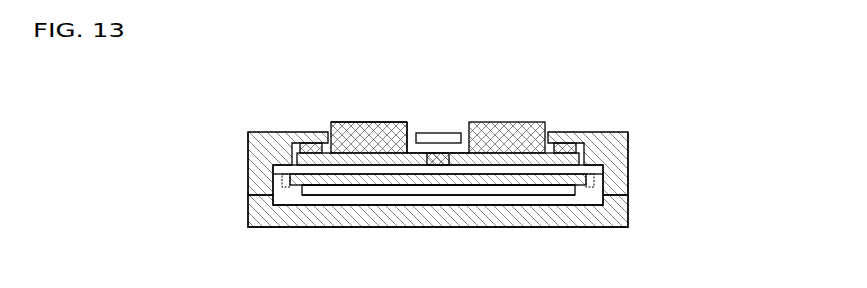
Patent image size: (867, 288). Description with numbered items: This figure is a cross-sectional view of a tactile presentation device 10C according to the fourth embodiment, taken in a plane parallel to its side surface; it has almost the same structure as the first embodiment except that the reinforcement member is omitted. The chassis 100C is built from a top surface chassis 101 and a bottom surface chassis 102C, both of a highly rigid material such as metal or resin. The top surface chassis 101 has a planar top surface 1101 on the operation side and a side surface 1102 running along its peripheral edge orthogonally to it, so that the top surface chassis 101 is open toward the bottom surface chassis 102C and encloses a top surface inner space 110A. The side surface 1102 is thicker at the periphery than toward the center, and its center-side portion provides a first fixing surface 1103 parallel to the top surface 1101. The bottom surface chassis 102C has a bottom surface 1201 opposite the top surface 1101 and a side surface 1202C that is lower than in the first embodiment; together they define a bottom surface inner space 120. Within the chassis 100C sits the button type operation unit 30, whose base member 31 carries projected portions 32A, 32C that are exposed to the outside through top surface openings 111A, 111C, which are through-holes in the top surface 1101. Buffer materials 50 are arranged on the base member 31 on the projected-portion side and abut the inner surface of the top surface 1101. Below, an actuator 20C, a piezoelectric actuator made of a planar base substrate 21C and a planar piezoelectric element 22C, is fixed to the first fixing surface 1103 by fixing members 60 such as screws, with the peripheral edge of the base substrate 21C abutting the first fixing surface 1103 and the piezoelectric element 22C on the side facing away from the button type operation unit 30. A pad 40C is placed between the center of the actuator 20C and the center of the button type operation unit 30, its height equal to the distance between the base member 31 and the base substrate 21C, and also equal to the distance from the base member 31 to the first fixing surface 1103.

The tactile presentation device 10C is at (614, 66).
The chassis 100C is at (464, 182).
The top surface chassis 101 is at (436, 149).
The top surface 1101 is at (600, 133).
The side surface 1102 is at (629, 157).
The first fixing surface 1103 is at (616, 179).
The bottom surface chassis 102C is at (472, 218).
The bottom surface inner space 120 is at (483, 218).
The bottom surface 1201 is at (596, 198).
The side surface 1202C is at (629, 207).
The button type operation unit 30 is at (364, 100).
The base member 31 is at (365, 122).
The projected portion 32C is at (388, 124).
The projected portion 32A is at (518, 121).
The top surface opening 111A is at (464, 122).
The top surface opening 111C is at (414, 122).
The top surface inner space 110A is at (341, 157).
The buffer material 50 is at (308, 142).
The fixing member 60 is at (286, 188).
The pad 40C is at (441, 186).
The actuator 20C is at (438, 230).
The base substrate 21C is at (380, 186).
The piezoelectric element 22C is at (348, 196).